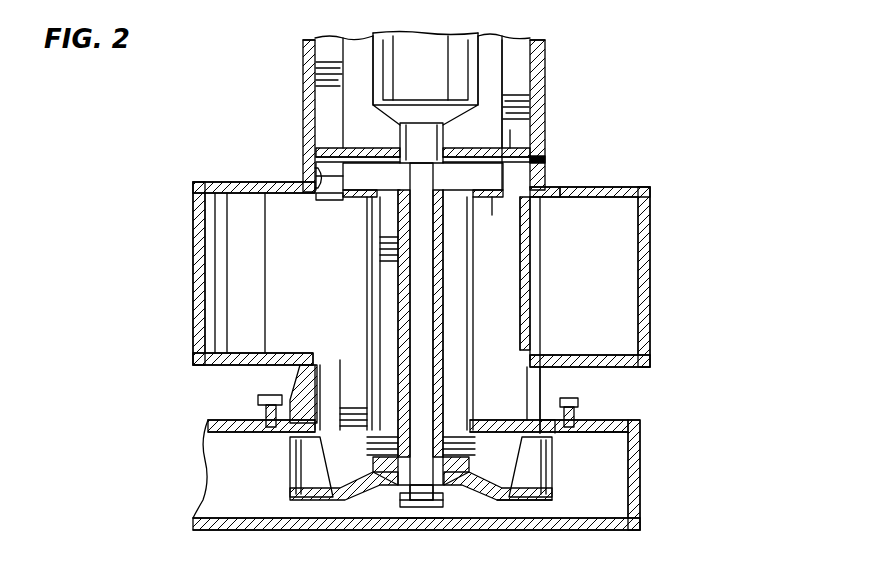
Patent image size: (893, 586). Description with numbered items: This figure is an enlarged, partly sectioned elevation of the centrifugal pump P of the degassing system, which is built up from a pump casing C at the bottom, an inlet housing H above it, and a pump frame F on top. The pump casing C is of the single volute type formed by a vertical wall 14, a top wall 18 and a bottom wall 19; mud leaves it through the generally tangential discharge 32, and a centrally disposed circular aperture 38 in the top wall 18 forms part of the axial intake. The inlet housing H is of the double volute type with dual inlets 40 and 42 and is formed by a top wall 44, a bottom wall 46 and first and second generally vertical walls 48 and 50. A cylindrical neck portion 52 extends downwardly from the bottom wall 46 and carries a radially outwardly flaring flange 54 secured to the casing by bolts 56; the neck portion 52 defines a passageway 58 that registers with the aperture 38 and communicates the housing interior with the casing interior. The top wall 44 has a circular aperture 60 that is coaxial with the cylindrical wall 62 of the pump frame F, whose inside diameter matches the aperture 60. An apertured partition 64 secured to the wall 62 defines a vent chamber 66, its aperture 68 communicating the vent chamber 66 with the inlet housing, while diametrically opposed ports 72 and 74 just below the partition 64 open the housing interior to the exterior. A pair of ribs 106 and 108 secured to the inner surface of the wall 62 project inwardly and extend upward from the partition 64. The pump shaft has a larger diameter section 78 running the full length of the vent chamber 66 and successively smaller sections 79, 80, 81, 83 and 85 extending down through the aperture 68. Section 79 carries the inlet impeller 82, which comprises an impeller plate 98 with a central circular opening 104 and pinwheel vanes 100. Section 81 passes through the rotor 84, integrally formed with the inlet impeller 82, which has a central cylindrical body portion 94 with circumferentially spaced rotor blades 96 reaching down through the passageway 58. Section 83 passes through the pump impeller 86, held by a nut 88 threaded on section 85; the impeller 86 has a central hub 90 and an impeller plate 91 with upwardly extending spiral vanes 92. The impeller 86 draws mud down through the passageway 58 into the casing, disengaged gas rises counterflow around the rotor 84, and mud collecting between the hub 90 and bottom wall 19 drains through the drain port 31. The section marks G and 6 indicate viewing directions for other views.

The vertical wall 14 is at (640, 462).
The top wall 18 is at (600, 434).
The bottom wall 19 is at (612, 531).
The drain port 31 is at (440, 530).
The tangential discharge 32 is at (215, 466).
The circular aperture 38 is at (295, 410).
The inlet 40 is at (625, 282).
The inlet 42 is at (222, 292).
The top wall 44 is at (625, 188).
The bottom wall 46 is at (205, 364).
The first vertical wall 48 is at (650, 323).
The second vertical wall 50 is at (195, 215).
The cylindrical neck portion 52 is at (535, 386).
The radially outwardly flaring flange 54 is at (578, 416).
The bolts 56 is at (258, 400).
The passageway 58 is at (535, 350).
The circular aperture 60 is at (317, 178).
The cylindrical wall 62 is at (545, 42).
The apertured partition 64 is at (518, 147).
The vent chamber 66 is at (360, 45).
The aperture 68 is at (385, 147).
The port 72 is at (547, 184).
The port 74 is at (307, 181).
The larger diameter section 78 is at (455, 45).
The smaller diameter section 79 is at (440, 133).
The smaller diameter section 80 is at (443, 177).
The smaller diameter section 81 is at (430, 270).
The inlet impeller 82 is at (326, 198).
The smaller diameter section 83 is at (440, 472).
The rotor 84 is at (360, 314).
The smaller diameter section 85 is at (416, 498).
The pump impeller 86 is at (350, 505).
The nut 88 is at (436, 506).
The central hub 90 is at (465, 488).
The impeller plate 91 is at (478, 478).
The spiral vanes 92 is at (300, 473).
The central cylindrical body portion 94 is at (440, 300).
The rotor blades 96 is at (458, 334).
The impeller plate 98 is at (492, 200).
The vanes 100 is at (537, 160).
The central circular opening 104 is at (378, 197).
The rib 106 is at (325, 62).
The rib 108 is at (515, 92).
The pump frame F is at (555, 63).
The centrifugal pump P is at (200, 115).
The section G is at (736, 54).
The inlet housing H is at (663, 225).
The section 6 is at (736, 388).
The pump casing C is at (690, 498).